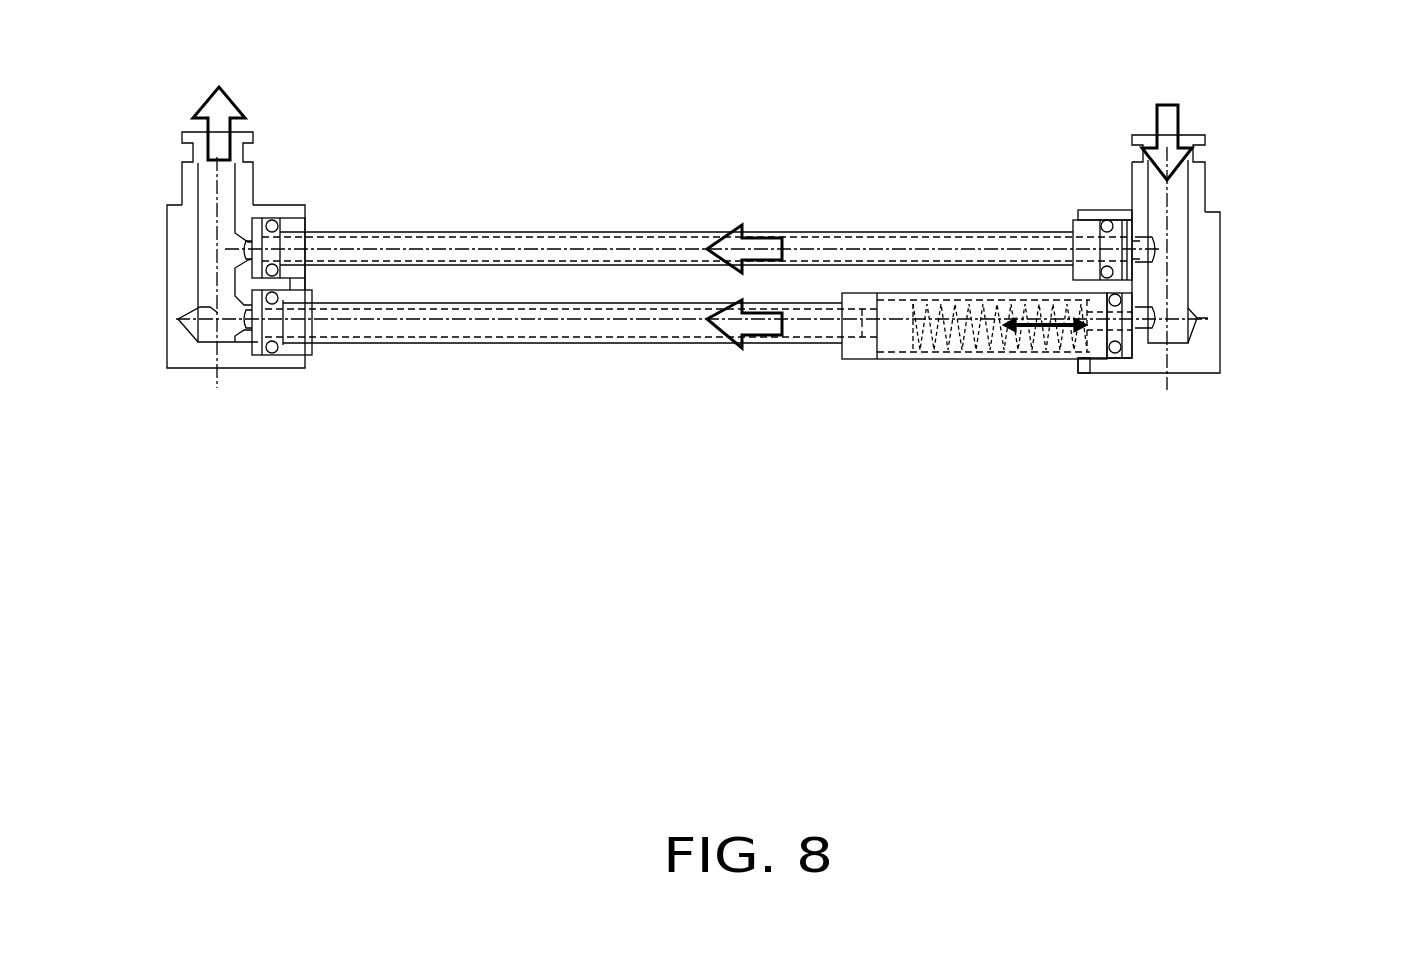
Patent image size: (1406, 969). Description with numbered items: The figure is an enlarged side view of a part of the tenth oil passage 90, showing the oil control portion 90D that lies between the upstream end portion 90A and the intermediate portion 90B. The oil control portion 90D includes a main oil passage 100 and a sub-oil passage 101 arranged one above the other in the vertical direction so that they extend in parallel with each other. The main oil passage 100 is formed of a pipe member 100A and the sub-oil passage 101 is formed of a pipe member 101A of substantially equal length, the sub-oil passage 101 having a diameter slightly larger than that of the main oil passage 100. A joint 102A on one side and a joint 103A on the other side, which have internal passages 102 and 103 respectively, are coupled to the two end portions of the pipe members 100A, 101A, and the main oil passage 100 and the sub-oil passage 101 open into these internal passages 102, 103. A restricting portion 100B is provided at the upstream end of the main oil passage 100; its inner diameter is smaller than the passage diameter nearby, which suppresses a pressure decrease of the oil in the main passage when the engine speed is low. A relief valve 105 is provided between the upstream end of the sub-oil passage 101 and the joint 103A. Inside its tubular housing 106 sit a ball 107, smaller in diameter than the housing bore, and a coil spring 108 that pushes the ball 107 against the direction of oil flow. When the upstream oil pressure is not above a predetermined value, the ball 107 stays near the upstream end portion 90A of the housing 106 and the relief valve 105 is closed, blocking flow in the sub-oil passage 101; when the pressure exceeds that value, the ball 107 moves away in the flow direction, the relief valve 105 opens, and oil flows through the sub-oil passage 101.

The tenth oil passage 90 is at (490, 127).
The oil control portion 90D is at (837, 157).
The upstream end portion 90A is at (1220, 293).
The intermediate portion 90B is at (165, 275).
The main oil passage 100 is at (632, 240).
The pipe member 100A is at (423, 232).
The restricting portion 100B is at (1132, 208).
The sub-oil passage 101 is at (625, 330).
The pipe member 101A is at (432, 343).
The internal passage 102 is at (207, 227).
The joint 102A is at (180, 187).
The internal passage 103 is at (1177, 232).
The joint 103A is at (1207, 182).
The relief valve 105 is at (888, 367).
The tubular housing 106 is at (962, 357).
The ball 107 is at (1083, 370).
The coil spring 108 is at (1022, 360).